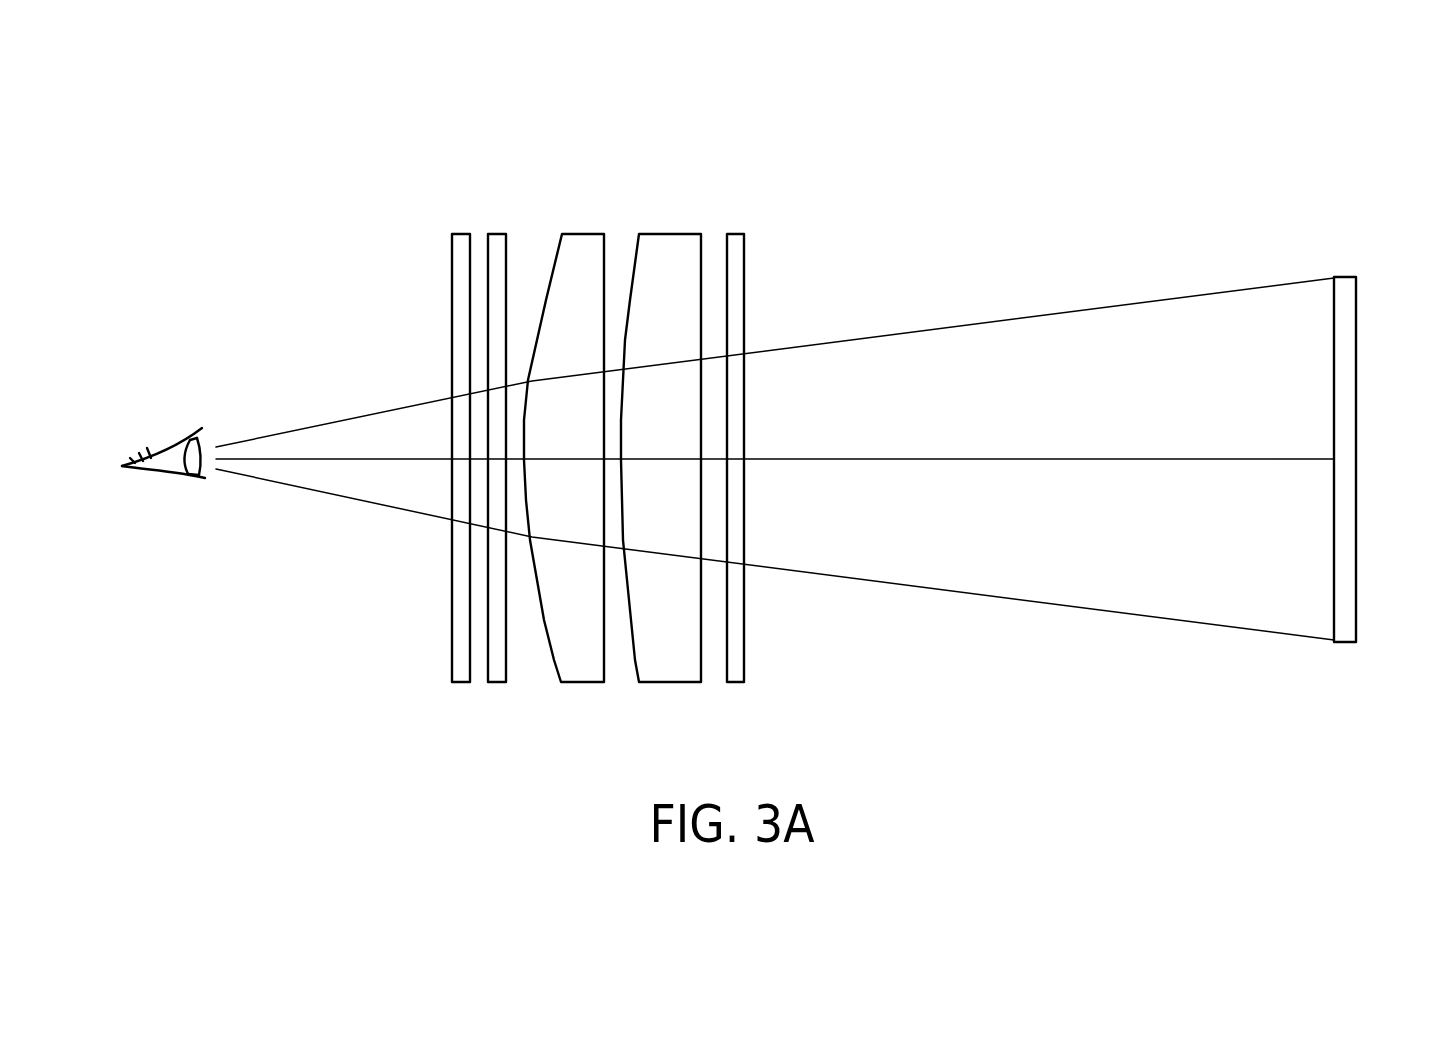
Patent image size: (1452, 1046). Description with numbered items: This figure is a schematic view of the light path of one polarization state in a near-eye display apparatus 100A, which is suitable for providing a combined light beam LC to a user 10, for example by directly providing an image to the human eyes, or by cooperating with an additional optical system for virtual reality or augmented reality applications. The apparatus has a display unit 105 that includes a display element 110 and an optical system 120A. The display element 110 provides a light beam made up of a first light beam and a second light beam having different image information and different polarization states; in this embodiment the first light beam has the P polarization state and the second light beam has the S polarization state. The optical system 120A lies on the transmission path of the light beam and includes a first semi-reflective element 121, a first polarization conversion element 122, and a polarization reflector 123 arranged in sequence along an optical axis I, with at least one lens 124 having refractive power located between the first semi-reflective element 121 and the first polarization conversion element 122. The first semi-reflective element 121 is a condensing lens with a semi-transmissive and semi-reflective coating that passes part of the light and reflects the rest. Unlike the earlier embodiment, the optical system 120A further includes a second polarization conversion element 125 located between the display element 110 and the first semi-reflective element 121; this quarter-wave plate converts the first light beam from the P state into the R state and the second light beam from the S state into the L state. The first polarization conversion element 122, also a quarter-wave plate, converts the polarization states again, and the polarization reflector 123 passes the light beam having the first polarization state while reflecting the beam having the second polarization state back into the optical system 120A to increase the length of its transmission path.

The user 10 is at (140, 416).
The combined light beam LC is at (240, 474).
The optical axis I is at (1360, 459).
The optical system 120A is at (597, 382).
The first semi-reflective element 121 is at (673, 243).
The first polarization conversion element 122 is at (498, 243).
The polarization reflector 123 is at (462, 243).
The lens 124 is at (585, 243).
The second polarization conversion element 125 is at (733, 243).
The display unit 105 is at (1293, 377).
The display element 110 is at (1347, 283).
The near-eye display apparatus 100A is at (1320, 732).